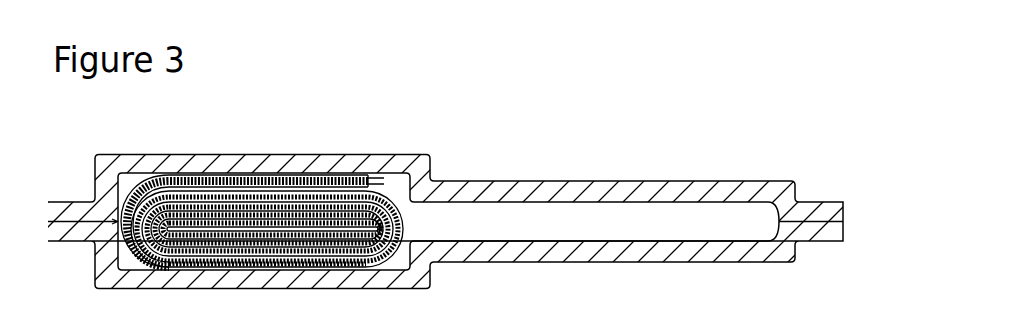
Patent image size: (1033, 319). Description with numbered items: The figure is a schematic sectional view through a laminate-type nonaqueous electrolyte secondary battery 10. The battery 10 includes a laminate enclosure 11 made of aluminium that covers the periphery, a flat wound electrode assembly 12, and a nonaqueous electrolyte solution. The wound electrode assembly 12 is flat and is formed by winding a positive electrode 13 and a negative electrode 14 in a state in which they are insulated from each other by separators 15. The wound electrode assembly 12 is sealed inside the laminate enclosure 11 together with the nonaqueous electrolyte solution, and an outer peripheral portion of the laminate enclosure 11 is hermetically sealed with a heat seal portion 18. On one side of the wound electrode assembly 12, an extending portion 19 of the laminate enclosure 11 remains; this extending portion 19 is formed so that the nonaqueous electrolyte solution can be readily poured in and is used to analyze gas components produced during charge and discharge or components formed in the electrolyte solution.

The nonaqueous electrolyte secondary battery 10 is at (164, 112).
The laminate enclosure 11 is at (640, 187).
The wound electrode assembly 12 is at (457, 96).
The positive electrode 13 is at (370, 188).
The negative electrode 14 is at (328, 179).
The separator 15 is at (383, 178).
The heat seal portion 18 is at (818, 210).
The extending portion 19 is at (542, 220).